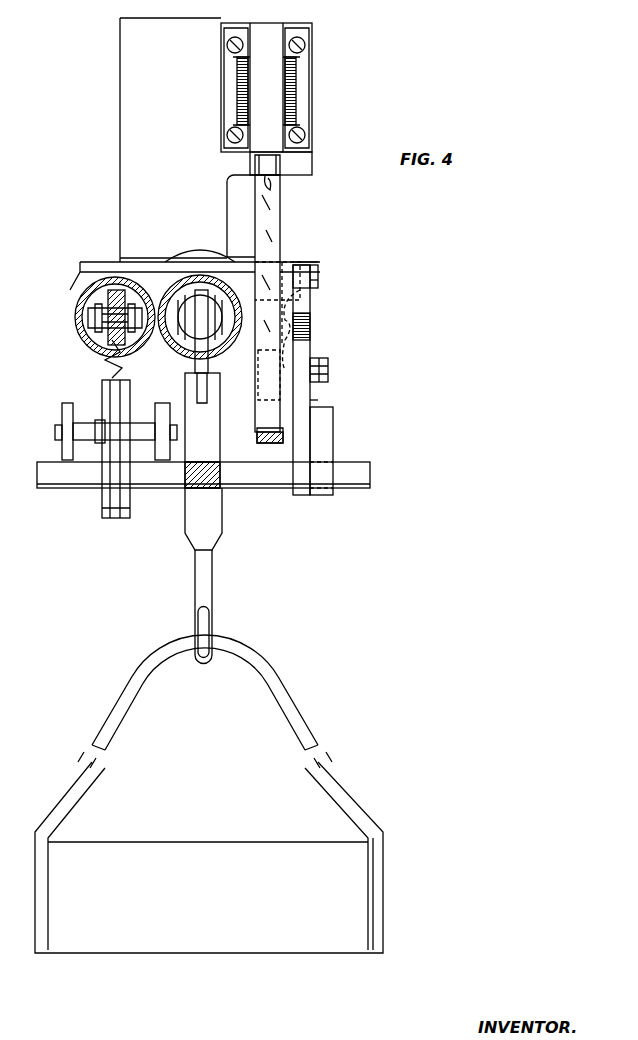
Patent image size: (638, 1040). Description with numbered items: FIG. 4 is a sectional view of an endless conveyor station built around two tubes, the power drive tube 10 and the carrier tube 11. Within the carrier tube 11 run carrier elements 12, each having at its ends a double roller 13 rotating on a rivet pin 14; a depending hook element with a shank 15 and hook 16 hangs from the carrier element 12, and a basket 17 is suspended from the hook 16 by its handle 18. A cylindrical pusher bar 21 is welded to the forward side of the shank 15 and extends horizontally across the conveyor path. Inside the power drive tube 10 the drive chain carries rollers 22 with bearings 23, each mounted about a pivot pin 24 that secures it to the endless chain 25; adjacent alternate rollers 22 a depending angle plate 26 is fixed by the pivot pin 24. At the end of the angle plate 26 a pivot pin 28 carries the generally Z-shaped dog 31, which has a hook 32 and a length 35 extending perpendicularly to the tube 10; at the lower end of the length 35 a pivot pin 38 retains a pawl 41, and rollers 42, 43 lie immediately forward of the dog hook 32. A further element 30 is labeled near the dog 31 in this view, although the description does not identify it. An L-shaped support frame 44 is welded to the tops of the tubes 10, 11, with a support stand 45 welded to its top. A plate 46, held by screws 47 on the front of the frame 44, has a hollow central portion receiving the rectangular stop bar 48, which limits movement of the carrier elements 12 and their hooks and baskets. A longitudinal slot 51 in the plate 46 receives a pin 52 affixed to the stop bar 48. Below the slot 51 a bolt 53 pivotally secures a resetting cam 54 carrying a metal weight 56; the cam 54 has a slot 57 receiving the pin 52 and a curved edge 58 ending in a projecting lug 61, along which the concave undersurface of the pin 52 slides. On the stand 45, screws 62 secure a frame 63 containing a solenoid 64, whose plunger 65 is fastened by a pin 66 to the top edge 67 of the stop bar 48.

The power drive tube 10 is at (72, 302).
The carrier tube 11 is at (188, 290).
The carrier element 12 is at (200, 348).
The double roller 13 is at (172, 280).
The rivet pin 14 is at (210, 356).
The shank 15 is at (212, 522).
The hook 16 is at (210, 592).
The basket 17 is at (273, 858).
The handle 18 is at (293, 735).
The pusher bar 21 is at (70, 490).
The roller 22 is at (110, 282).
The bearing 23 is at (92, 312).
The pivot pin 24 is at (140, 300).
The endless chain 25 is at (126, 340).
The depending angle plate 26 is at (100, 365).
The pivot pin 28 is at (102, 394).
The pin 30 is at (104, 412).
The dog 31 is at (108, 446).
The hook 32 is at (114, 520).
The length 35 is at (125, 434).
The pivot pin 38 is at (126, 468).
The pawl 41 is at (108, 472).
The roller 42 is at (62, 442).
The roller 43 is at (168, 420).
The L-shaped support frame 44 is at (224, 430).
The support stand 45 is at (128, 72).
The plate 46 is at (290, 266).
The screw 47 is at (302, 302).
The stop bar 48 is at (281, 216).
The longitudinal slot 51 is at (271, 375).
The pin 52 is at (319, 276).
The bolt 53 is at (329, 372).
The resetting cam 54 is at (312, 402).
The metal weight 56 is at (322, 432).
The slot 57 is at (311, 328).
The curved edge 58 is at (319, 284).
The projecting lug 61 is at (306, 266).
The screw 62 is at (305, 138).
The frame 63 is at (273, 30).
The solenoid 64 is at (297, 88).
The plunger 65 is at (250, 160).
The pin 66 is at (255, 168).
The top edge 67 is at (273, 186).